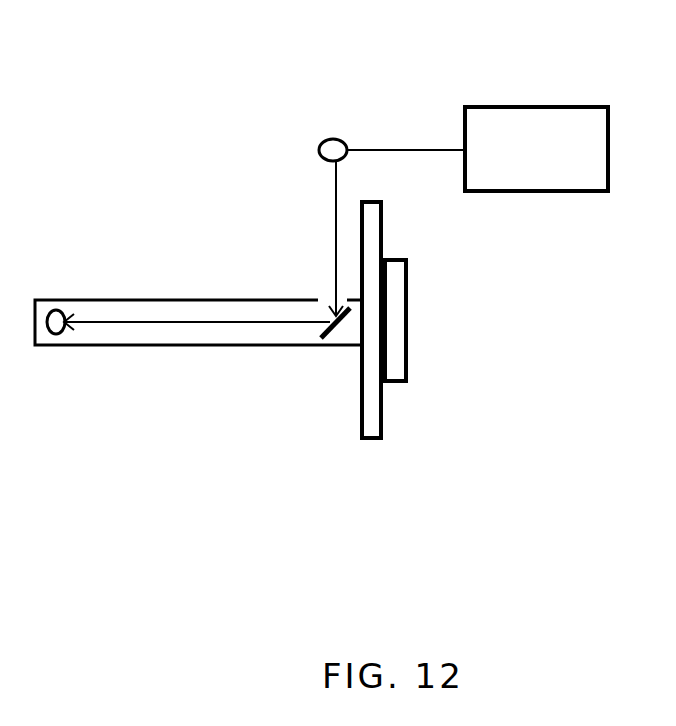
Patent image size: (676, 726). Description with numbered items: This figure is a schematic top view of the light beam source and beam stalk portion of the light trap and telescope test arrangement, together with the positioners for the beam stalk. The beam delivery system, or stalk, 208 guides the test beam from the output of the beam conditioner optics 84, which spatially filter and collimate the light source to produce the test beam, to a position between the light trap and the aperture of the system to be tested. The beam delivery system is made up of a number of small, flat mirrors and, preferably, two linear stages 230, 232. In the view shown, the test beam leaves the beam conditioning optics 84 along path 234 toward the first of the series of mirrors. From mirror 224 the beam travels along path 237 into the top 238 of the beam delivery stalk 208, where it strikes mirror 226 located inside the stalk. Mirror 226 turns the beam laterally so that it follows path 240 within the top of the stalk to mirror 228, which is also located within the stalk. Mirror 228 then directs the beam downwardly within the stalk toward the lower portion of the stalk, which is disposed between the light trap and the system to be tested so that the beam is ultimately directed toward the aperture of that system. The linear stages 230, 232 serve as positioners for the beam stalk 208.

The beam delivery stalk 208 is at (110, 269).
The top of the beam delivery stalk 238 is at (197, 300).
The path 240 is at (172, 324).
The mirror 228 is at (63, 345).
The mirror 226 is at (333, 341).
The path 237 is at (333, 220).
The mirror 224 is at (326, 138).
The path 234 is at (397, 147).
The beam conditioner optics 84 is at (540, 171).
The linear stage 232 is at (384, 425).
The linear stage 230 is at (398, 385).